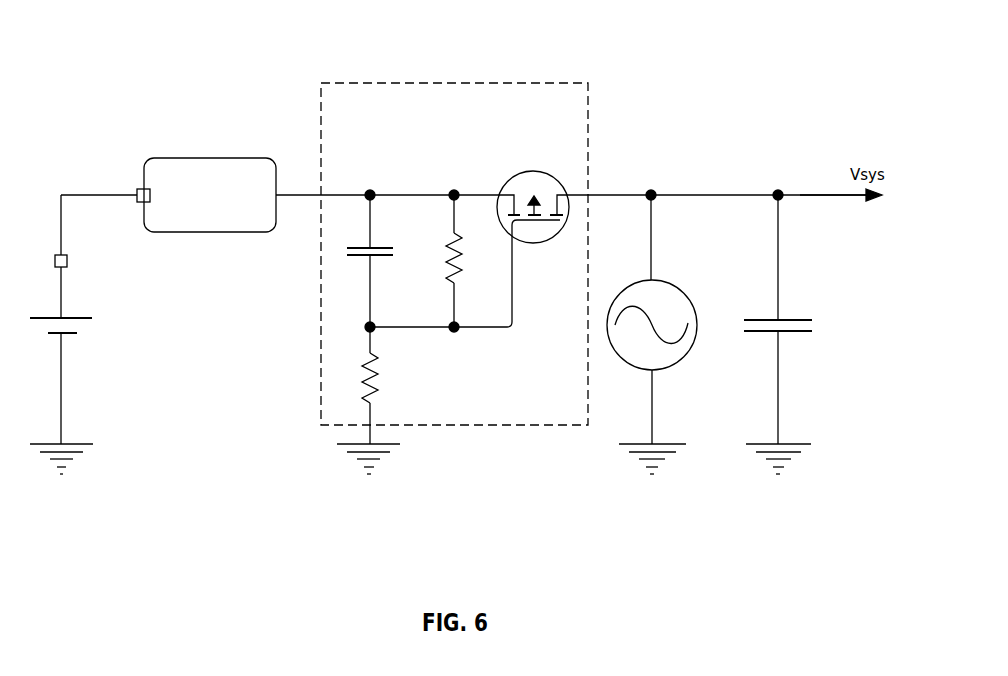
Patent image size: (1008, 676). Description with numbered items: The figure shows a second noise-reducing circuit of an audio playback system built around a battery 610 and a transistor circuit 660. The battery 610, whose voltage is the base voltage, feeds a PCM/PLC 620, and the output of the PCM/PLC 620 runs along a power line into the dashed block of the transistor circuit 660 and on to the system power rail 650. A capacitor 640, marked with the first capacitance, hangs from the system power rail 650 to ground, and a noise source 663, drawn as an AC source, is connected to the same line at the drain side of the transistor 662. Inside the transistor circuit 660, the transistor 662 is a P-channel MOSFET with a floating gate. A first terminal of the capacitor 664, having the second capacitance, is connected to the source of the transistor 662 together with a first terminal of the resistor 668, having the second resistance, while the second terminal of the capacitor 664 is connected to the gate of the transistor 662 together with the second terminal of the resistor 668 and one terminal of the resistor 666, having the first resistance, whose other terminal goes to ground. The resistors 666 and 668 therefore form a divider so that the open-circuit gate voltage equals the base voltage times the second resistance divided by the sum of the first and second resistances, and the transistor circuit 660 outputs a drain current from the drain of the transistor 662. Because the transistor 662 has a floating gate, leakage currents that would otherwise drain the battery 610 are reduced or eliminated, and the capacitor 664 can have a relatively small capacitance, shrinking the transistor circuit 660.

The battery 610 is at (84, 305).
The PCM/PLC 620 is at (203, 142).
The capacitor 640 is at (806, 304).
The system power rail 650 is at (863, 154).
The transistor circuit 660 is at (424, 66).
The transistor 662 is at (535, 158).
The noise source 663 is at (668, 274).
The capacitor 664 is at (381, 239).
The resistor 666 is at (395, 367).
The resistor 668 is at (497, 277).